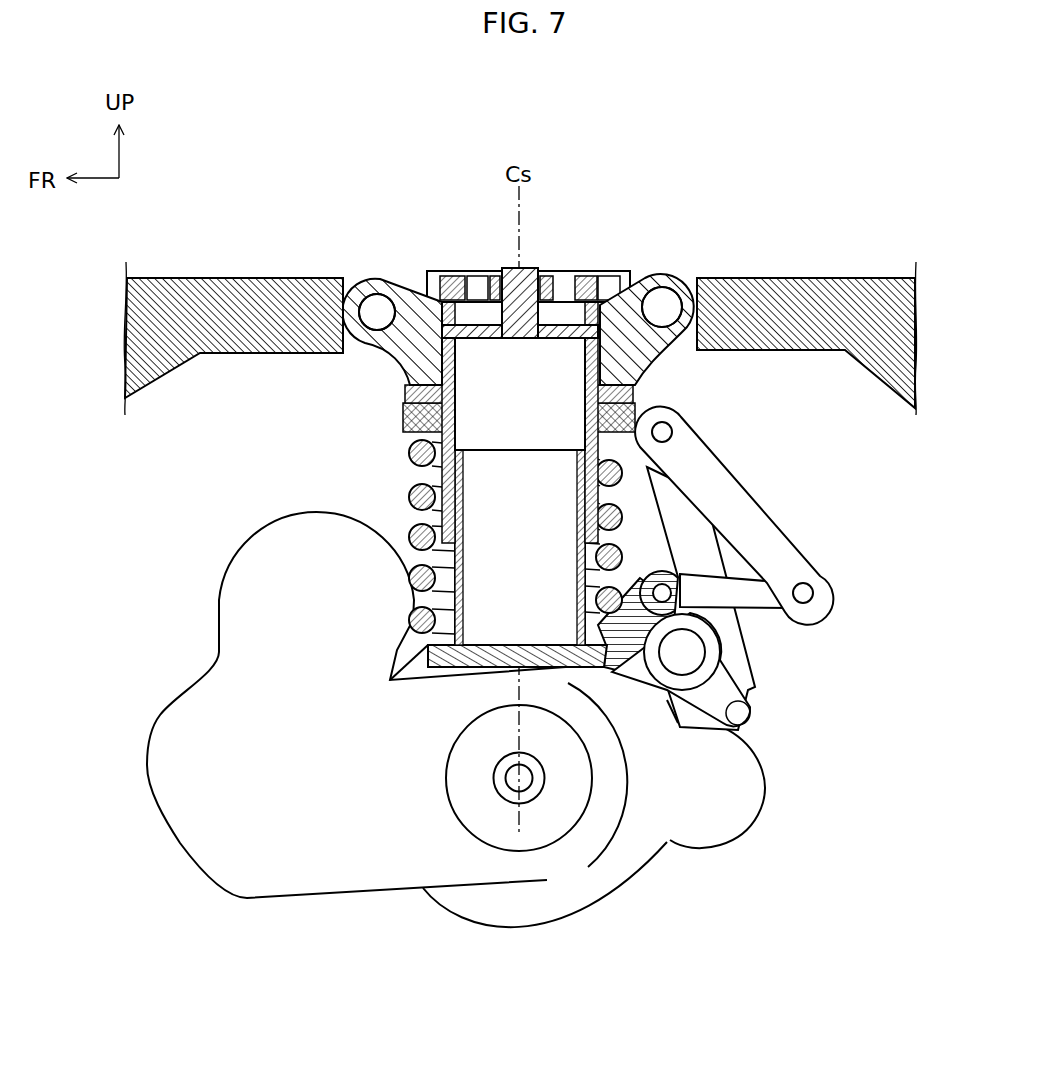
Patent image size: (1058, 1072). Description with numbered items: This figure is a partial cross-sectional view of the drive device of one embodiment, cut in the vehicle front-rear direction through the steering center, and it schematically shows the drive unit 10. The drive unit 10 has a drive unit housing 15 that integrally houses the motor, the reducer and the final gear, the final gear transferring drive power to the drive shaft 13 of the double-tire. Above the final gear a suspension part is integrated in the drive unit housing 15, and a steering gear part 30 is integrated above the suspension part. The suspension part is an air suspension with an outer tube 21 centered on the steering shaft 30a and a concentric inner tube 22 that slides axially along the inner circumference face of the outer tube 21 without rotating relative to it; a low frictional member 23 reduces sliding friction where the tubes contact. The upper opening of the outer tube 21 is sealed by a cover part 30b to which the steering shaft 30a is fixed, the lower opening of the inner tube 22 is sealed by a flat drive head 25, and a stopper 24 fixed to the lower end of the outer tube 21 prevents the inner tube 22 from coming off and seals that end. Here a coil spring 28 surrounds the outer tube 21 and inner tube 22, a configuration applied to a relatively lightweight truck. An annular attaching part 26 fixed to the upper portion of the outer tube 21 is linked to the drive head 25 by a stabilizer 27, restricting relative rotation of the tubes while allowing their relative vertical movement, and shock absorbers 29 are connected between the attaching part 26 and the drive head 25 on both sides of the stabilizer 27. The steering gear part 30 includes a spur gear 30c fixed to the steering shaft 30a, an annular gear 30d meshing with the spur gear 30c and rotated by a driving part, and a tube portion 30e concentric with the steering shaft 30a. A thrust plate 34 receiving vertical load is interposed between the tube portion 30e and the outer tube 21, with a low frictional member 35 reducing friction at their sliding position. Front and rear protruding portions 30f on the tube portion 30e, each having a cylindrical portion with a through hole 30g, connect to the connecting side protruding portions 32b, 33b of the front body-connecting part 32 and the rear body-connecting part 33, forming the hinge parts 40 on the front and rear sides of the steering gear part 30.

The drive unit 10 is at (451, 702).
The drive shaft 13 is at (507, 778).
The drive unit housing 15 is at (218, 636).
The outer tube 21 is at (632, 418).
The inner tube 22 is at (455, 601).
The low frictional member 23 is at (409, 489).
The stopper 24 is at (413, 542).
The drive head 25 is at (443, 673).
The attaching part 26 is at (403, 423).
The stabilizer 27 is at (761, 568).
The coil spring 28 is at (640, 510).
The shock absorber 29 is at (752, 653).
The steering gear part 30 is at (533, 361).
The steering shaft 30a is at (530, 268).
The cover part 30b is at (537, 339).
The spur gear 30c is at (494, 272).
The annular gear 30d is at (590, 272).
The tube portion 30e is at (677, 312).
The protruding portion 30f is at (678, 335).
The through hole 30g is at (377, 300).
The front body-connecting part 32 is at (210, 272).
The connecting side protruding portion 32b is at (405, 282).
The rear body-connecting part 33 is at (850, 272).
The connecting side protruding portion 33b is at (687, 274).
The thrust plate 34 is at (405, 393).
The low frictional member 35 is at (456, 377).
The hinge part 40 is at (657, 268).